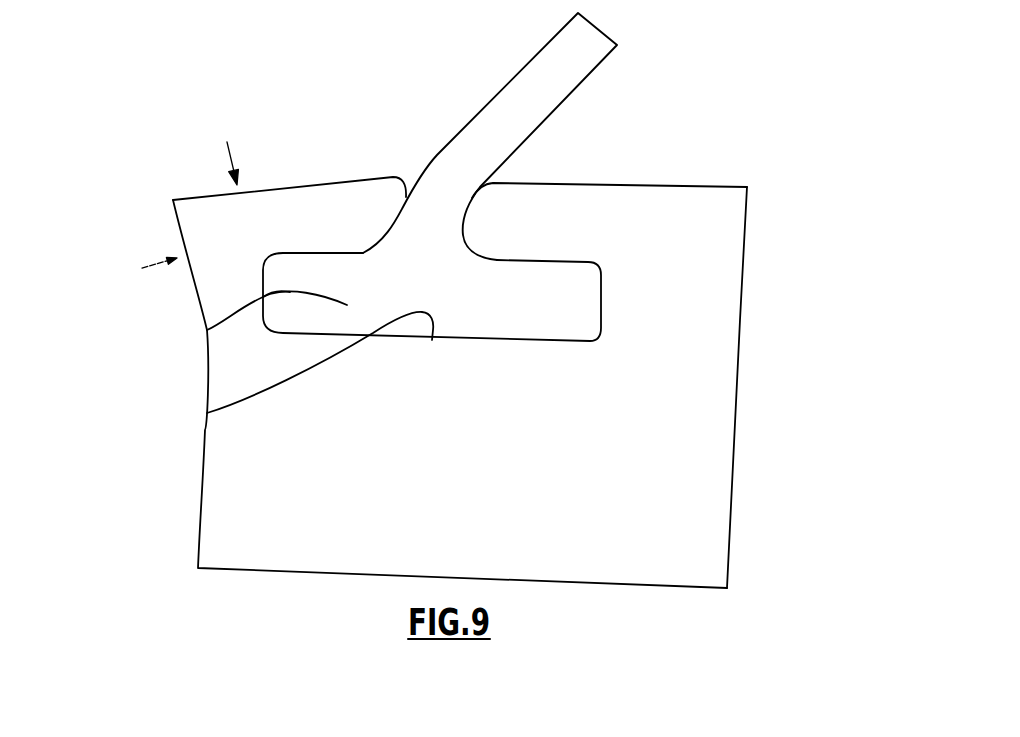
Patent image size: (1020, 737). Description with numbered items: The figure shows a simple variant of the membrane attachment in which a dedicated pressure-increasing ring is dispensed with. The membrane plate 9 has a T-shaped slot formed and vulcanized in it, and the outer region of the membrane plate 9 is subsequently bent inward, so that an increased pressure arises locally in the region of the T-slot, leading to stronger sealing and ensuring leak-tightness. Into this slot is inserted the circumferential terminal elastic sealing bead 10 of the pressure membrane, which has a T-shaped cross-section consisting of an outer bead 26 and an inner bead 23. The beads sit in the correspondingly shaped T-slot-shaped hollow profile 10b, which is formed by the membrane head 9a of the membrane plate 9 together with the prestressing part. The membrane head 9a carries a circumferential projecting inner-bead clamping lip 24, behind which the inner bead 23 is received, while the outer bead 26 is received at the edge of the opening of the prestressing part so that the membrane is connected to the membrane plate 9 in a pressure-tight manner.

The membrane plate 9 is at (677, 253).
The membrane head 9a is at (737, 220).
The elastic sealing bead 10 is at (207, 330).
The T-slot-shaped hollow profile 10b is at (207, 413).
The inner bead 23 is at (597, 307).
The inner-bead clamping lip 24 is at (553, 203).
The outer bead 26 is at (290, 262).